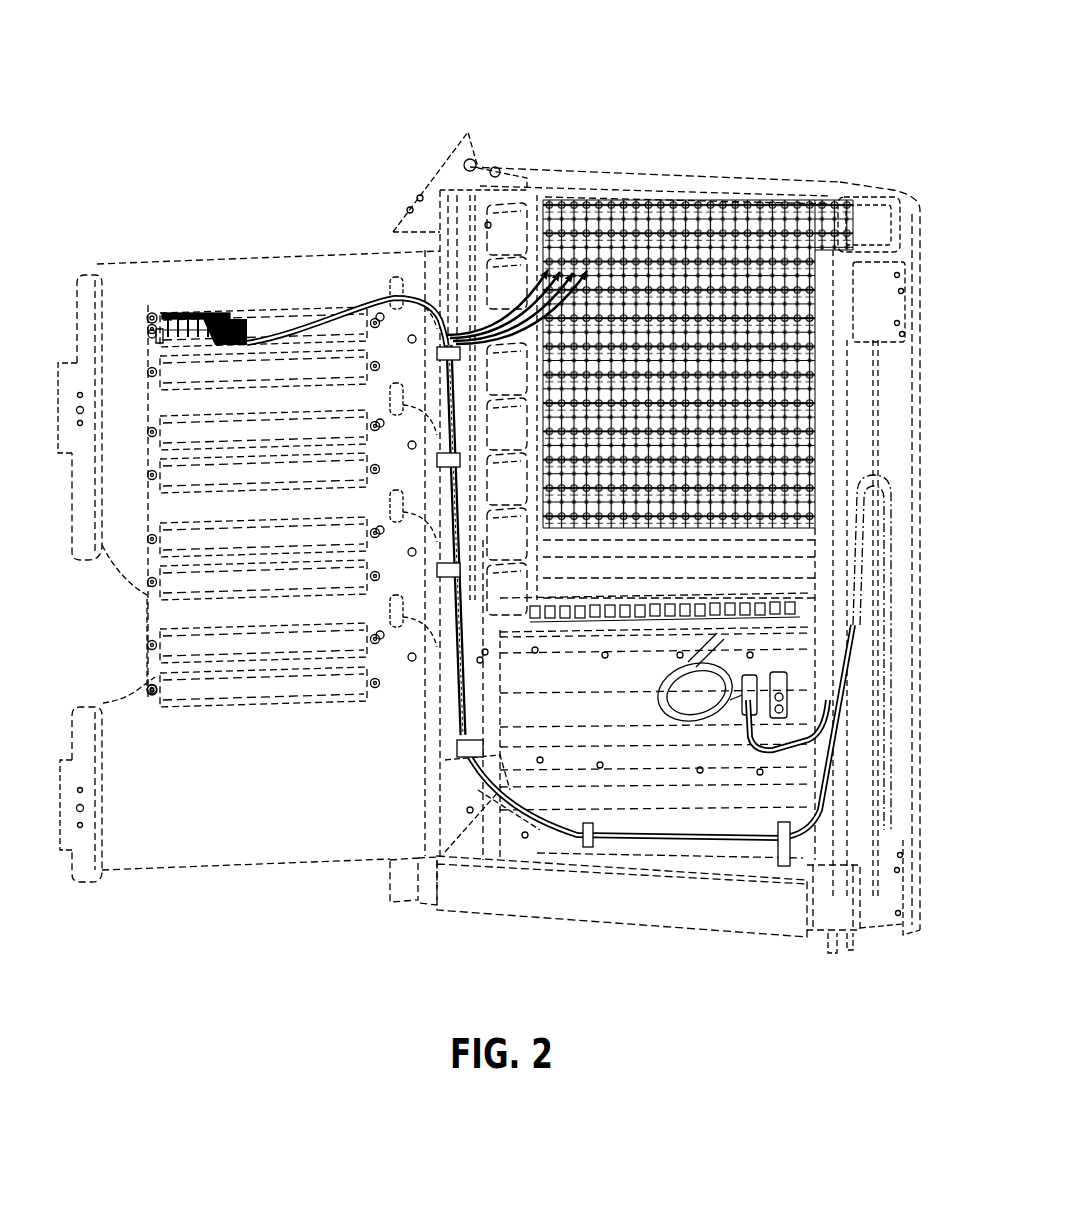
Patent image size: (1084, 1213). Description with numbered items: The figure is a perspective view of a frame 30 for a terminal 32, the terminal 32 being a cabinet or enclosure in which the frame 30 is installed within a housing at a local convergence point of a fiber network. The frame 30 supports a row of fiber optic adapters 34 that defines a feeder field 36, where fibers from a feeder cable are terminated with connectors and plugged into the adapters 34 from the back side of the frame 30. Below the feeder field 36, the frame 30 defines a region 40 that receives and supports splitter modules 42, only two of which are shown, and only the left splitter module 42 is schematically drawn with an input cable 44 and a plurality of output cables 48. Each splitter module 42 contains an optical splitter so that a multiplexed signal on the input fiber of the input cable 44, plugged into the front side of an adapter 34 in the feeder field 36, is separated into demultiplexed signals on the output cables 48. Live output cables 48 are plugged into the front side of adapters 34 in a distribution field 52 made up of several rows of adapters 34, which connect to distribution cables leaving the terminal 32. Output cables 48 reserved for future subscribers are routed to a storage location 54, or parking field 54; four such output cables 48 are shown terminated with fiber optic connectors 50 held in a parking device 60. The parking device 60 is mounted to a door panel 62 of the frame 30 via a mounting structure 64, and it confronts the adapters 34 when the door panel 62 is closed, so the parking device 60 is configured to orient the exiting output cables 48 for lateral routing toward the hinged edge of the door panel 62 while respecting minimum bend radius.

The frame 30 is at (895, 191).
The terminal 32 is at (740, 106).
The fiber optic adapters 34 is at (640, 232).
The feeder field 36 is at (786, 612).
The region 40 is at (642, 502).
The splitter module 42 is at (783, 720).
The input cable 44 is at (717, 728).
The output cables 48 is at (520, 300).
The fiber optic connectors 50 is at (556, 278).
The distribution field 52 is at (757, 204).
The storage location 54 is at (205, 299).
The parking device 60 is at (155, 337).
The door panel 62 is at (163, 262).
The mounting structure 64 is at (158, 314).